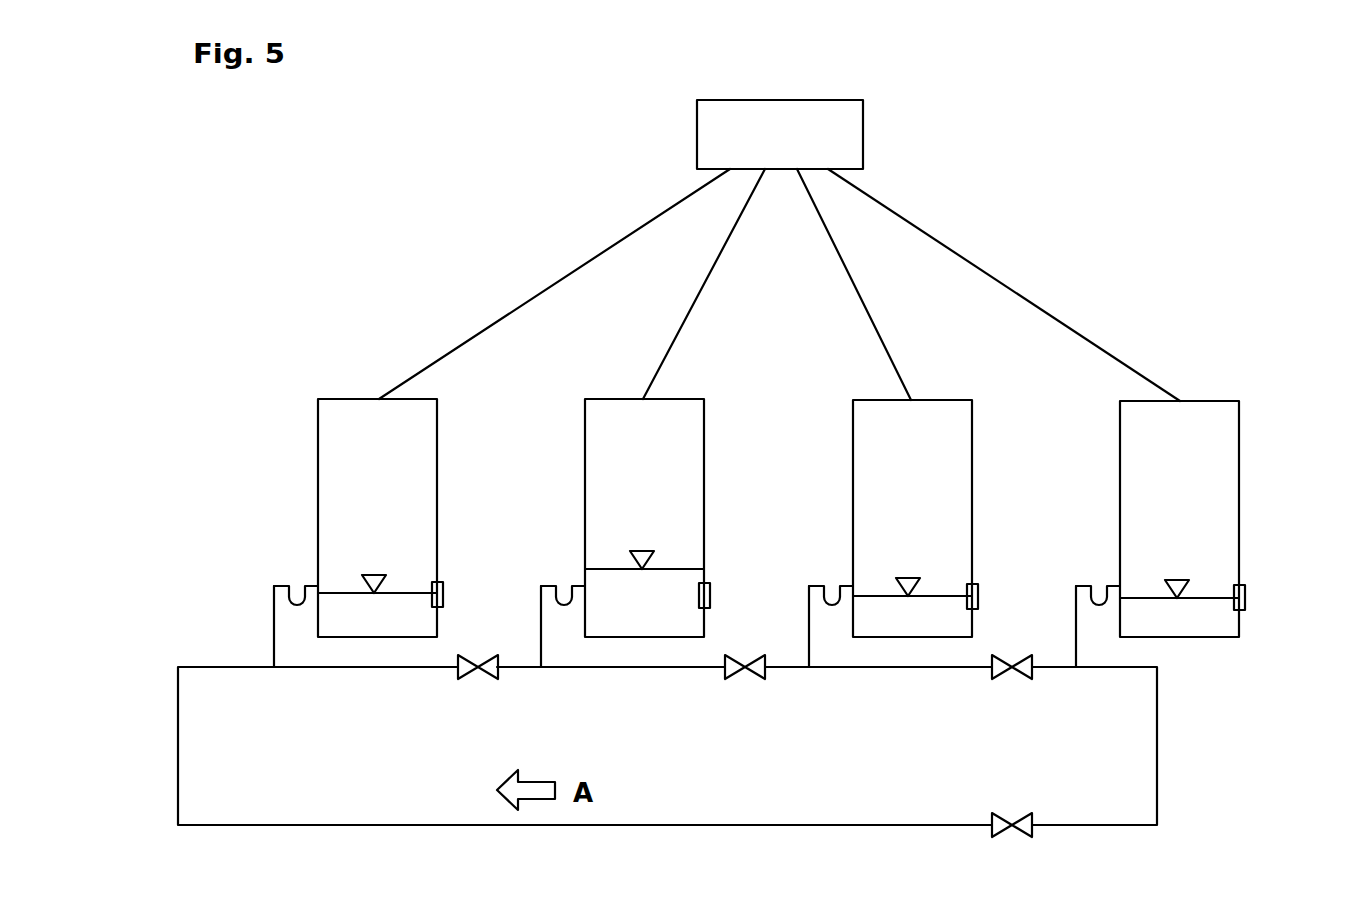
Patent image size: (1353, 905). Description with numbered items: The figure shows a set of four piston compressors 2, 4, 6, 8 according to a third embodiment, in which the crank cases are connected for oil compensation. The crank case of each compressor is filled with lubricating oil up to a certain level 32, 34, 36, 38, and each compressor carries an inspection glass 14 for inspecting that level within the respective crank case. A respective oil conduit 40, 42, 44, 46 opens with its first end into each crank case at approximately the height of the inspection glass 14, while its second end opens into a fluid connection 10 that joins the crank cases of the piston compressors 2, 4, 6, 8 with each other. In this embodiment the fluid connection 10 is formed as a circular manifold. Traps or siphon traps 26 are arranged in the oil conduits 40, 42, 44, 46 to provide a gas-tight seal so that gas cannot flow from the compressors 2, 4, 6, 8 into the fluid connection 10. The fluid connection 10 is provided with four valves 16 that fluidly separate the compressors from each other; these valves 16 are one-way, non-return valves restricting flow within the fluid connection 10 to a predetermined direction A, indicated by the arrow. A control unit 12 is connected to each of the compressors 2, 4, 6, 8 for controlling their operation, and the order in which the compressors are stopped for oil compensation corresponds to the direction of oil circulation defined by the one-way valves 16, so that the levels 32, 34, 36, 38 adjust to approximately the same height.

The piston compressor 2 is at (343, 399).
The piston compressor 4 is at (620, 399).
The piston compressor 6 is at (935, 400).
The piston compressor 8 is at (1203, 401).
The fluid connection 10 is at (632, 668).
The control unit 12 is at (777, 100).
The inspection glass 14 is at (443, 593).
The valve 16 is at (475, 680).
The trap 26 is at (297, 604).
The level 32 is at (340, 593).
The level 34 is at (607, 569).
The level 36 is at (875, 596).
The level 38 is at (1142, 598).
The oil conduit 40 is at (273, 627).
The oil conduit 42 is at (540, 627).
The oil conduit 44 is at (808, 627).
The oil conduit 46 is at (1075, 627).